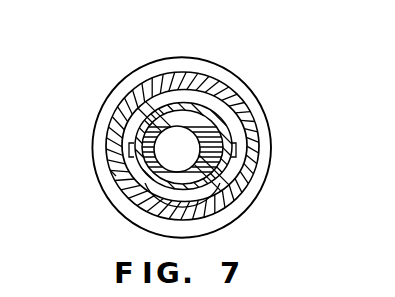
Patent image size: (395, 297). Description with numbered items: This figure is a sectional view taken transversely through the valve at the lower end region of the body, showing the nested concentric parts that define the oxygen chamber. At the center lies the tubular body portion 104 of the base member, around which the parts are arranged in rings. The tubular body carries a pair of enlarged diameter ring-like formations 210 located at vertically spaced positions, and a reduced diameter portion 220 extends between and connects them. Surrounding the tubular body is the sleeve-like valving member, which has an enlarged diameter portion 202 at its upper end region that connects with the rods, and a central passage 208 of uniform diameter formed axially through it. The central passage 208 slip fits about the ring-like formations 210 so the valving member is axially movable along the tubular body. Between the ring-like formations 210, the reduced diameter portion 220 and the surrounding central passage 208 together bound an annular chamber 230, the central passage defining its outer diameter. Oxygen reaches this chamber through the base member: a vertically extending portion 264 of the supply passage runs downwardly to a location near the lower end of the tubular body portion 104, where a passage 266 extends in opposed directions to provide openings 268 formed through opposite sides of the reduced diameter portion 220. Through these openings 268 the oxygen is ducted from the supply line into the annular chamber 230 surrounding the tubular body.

The tubular body portion 104 is at (217, 170).
The enlarged diameter portion 202 is at (142, 68).
The central passage 208 is at (243, 210).
The ring-like formations 210 is at (113, 96).
The reduced diameter portion 220 is at (224, 87).
The annular chamber 230 is at (152, 97).
The vertically extending portion 264 is at (237, 117).
The passage 266 is at (113, 174).
The openings 268 is at (129, 152).